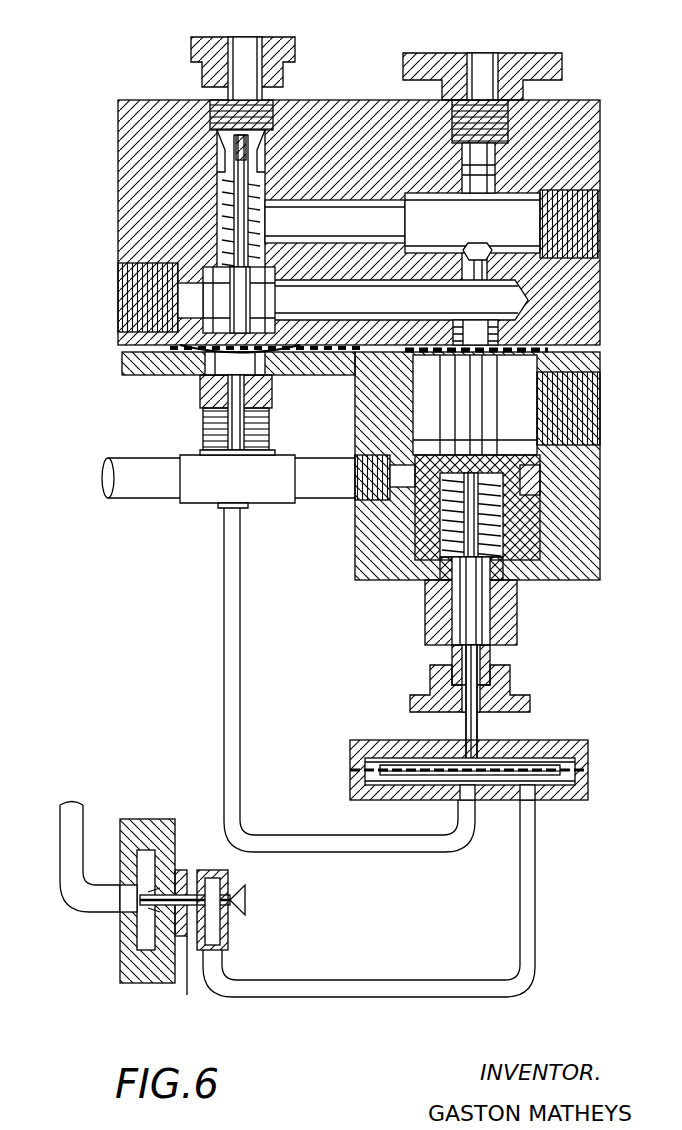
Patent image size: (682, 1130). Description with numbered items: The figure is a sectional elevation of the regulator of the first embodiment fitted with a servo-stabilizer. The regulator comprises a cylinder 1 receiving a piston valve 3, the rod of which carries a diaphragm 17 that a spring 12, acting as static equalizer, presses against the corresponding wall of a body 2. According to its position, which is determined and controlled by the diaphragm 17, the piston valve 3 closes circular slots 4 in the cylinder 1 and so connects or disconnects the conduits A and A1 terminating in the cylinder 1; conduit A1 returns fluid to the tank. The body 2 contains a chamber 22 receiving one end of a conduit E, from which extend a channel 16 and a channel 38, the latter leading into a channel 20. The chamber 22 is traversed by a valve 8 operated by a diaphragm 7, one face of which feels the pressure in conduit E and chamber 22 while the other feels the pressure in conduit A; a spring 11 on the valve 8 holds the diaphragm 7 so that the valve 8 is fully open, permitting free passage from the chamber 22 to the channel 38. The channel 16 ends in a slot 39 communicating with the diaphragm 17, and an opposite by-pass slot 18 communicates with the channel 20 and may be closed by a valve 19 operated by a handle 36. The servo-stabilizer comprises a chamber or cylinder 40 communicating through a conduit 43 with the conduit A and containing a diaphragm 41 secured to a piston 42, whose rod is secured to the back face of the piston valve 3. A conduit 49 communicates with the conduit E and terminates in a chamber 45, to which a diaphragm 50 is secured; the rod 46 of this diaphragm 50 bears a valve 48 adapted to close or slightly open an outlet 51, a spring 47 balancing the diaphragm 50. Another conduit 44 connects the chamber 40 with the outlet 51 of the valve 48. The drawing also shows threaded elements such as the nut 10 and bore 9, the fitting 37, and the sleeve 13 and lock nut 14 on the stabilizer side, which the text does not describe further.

The cylinder 1 is at (358, 402).
The body 2 is at (338, 112).
The piston valve 3 is at (515, 520).
The circular slots 4 is at (398, 462).
The diaphragm 7 is at (185, 345).
The valve 8 is at (220, 285).
The threaded bore 9 is at (215, 110).
The adjusting nut 10 is at (206, 45).
The spring 11 is at (243, 196).
The spring 12 is at (497, 557).
The sleeve 13 is at (455, 655).
The lock nut 14 is at (440, 676).
The channel 16 is at (500, 305).
The diaphragm 17 is at (505, 352).
The by-pass slot 18 is at (485, 272).
The valve 19 is at (575, 240).
The channel 20 is at (518, 222).
The chamber 22 is at (222, 306).
The handle 36 is at (545, 62).
The fitting 37 is at (215, 385).
The channel 38 is at (265, 195).
The slot 39 is at (500, 312).
The chamber or cylinder 40 is at (590, 755).
The diaphragm 41 is at (365, 770).
The piston 42 is at (490, 733).
The conduit 43 is at (400, 838).
The conduit 44 is at (430, 985).
The chamber 45 is at (128, 958).
The rod 46 is at (200, 976).
The spring 47 is at (178, 875).
The valve 48 is at (242, 898).
The conduit 49 is at (62, 838).
The diaphragm 50 is at (138, 925).
The outlet 51 is at (230, 932).
The conduit A is at (155, 490).
The conduit A1 is at (590, 425).
The conduit E is at (600, 195).